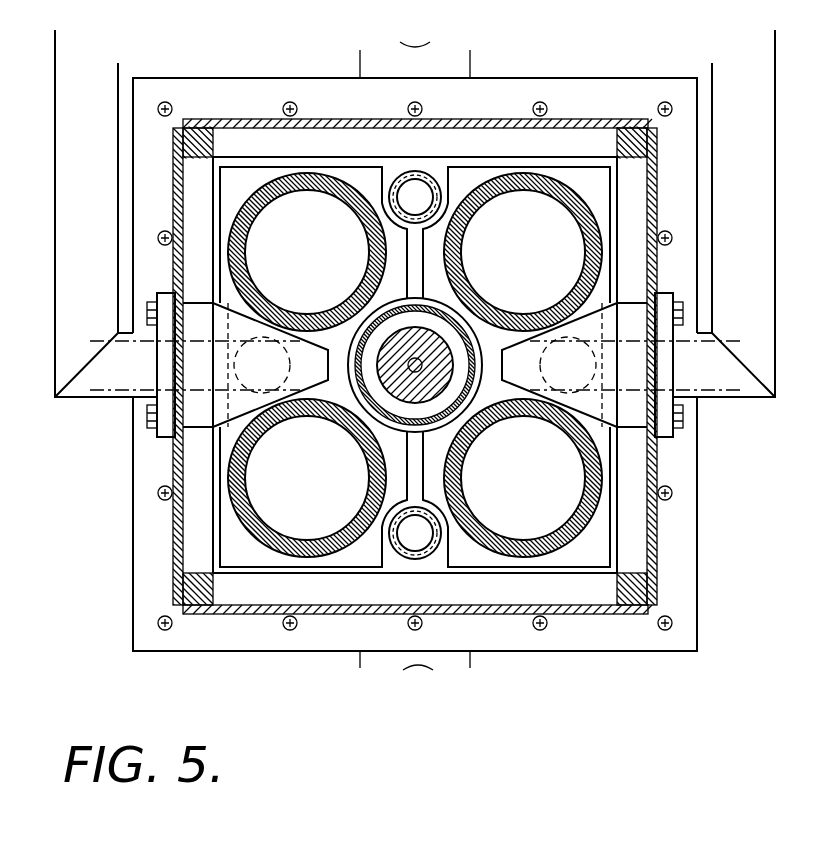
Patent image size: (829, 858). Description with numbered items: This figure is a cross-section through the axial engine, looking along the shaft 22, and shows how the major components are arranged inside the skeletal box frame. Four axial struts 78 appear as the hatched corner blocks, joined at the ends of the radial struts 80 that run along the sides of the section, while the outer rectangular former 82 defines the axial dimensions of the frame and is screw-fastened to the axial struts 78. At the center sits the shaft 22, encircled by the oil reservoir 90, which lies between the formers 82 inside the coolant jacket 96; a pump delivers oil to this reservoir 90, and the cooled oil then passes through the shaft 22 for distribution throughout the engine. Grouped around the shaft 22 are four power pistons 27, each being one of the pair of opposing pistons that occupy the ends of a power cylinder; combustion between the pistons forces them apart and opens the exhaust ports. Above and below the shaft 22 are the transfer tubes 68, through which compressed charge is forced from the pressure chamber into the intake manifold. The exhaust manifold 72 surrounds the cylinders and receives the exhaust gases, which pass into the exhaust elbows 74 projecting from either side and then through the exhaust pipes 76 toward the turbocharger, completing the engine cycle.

The shaft 22 is at (455, 351).
The power piston 27 is at (313, 306).
The transfer tube 68 is at (440, 190).
The exhaust manifold 72 is at (249, 196).
The exhaust elbow 74 is at (200, 302).
The exhaust pipe 76 is at (85, 400).
The axial strut 78 is at (213, 143).
The radial strut 80 is at (346, 119).
The former 82 is at (231, 78).
The oil reservoir 90 is at (433, 410).
The coolant jacket 96 is at (432, 306).